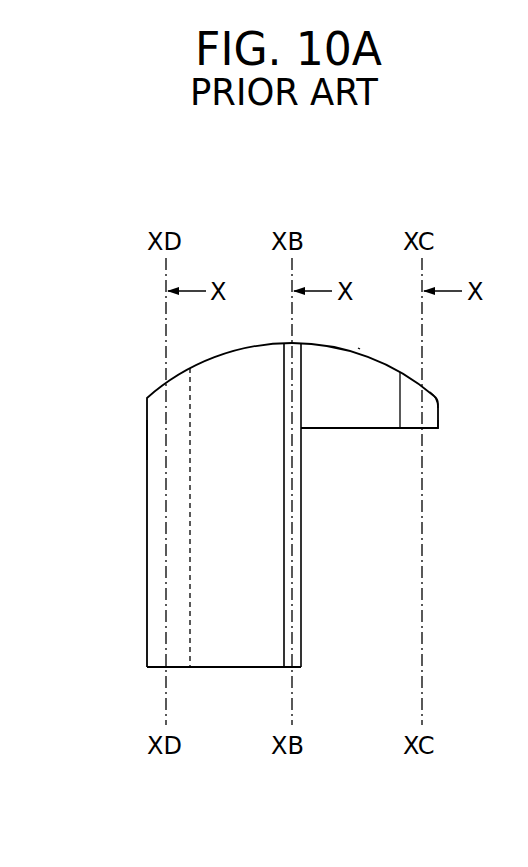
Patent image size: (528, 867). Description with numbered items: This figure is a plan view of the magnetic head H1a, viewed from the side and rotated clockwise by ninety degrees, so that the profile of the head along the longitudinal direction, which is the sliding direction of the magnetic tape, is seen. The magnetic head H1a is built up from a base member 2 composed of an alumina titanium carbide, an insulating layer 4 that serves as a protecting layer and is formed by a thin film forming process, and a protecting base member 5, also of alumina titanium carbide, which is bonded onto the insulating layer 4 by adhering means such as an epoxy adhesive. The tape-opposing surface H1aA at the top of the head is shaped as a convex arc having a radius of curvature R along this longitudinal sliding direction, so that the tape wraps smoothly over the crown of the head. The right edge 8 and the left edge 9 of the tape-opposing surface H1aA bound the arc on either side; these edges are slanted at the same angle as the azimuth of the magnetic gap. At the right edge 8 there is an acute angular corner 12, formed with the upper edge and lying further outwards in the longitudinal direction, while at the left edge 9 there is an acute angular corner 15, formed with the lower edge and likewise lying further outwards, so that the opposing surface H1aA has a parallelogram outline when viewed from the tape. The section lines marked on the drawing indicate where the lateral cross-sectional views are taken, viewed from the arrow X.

The base member 2 is at (242, 612).
The insulating layer 4 is at (295, 648).
The protecting base member 5 is at (360, 416).
The right edge 8 is at (440, 426).
The left edge 9 is at (148, 436).
The acute angular corner 12 is at (438, 405).
The acute angular corner 15 is at (148, 398).
The radius of curvature R is at (213, 360).
The magnetic head H1a is at (363, 260).
The tape-opposing surface H1aA is at (358, 348).